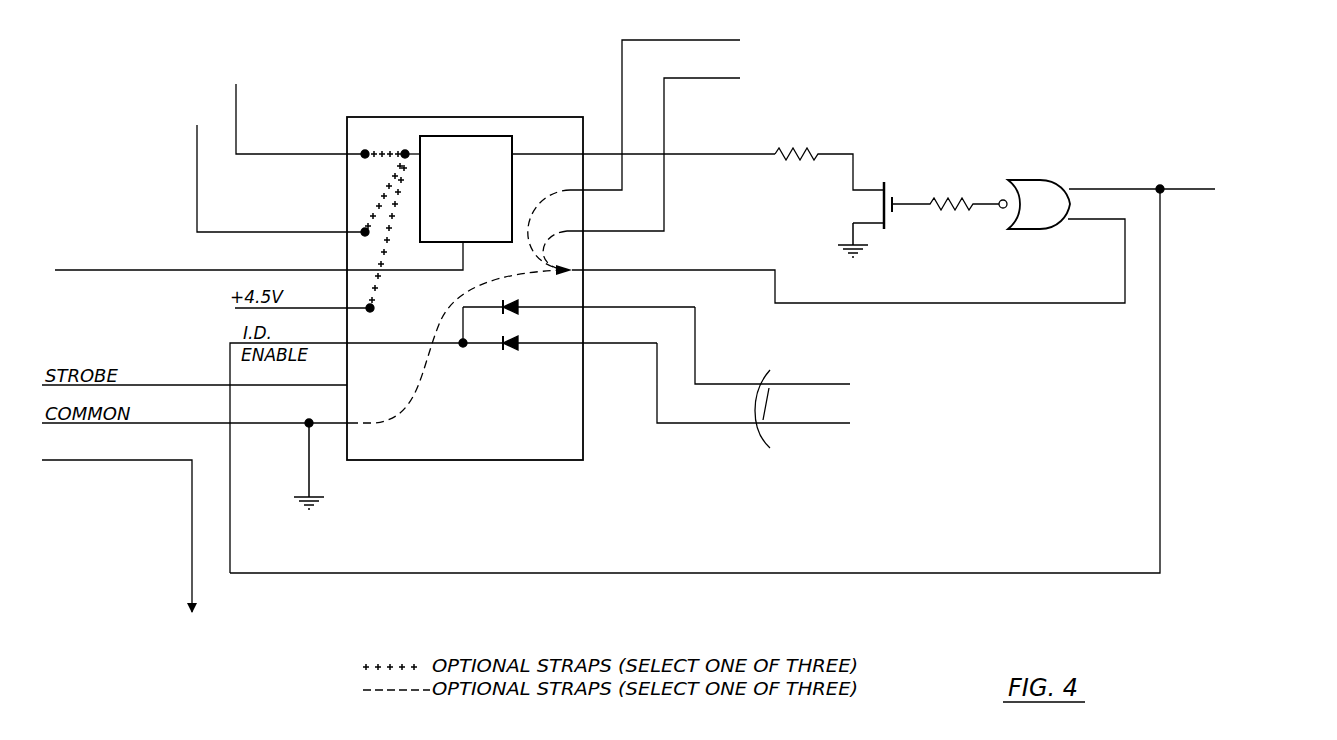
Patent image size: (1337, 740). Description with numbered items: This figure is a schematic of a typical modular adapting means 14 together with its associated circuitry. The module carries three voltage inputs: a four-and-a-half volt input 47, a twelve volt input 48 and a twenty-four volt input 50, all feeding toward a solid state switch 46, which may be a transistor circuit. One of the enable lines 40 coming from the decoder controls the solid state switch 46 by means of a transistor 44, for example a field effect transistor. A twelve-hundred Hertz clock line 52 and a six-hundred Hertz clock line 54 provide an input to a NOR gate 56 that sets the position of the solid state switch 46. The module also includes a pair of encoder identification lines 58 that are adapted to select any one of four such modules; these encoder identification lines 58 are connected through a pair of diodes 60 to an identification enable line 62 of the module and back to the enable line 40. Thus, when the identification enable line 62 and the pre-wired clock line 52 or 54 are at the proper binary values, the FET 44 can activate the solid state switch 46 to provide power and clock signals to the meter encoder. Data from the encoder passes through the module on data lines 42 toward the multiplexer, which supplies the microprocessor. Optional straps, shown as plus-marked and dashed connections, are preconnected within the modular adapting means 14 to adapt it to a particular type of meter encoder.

The modular adapting means 14 is at (518, 462).
The enable line 40 is at (1200, 185).
The data lines 42 is at (192, 573).
The transistor 44 is at (888, 183).
The solid state switch 46 is at (477, 136).
The 4.5 volt input 47 is at (315, 270).
The 12 volt input 48 is at (304, 153).
The 24 volt input 50 is at (197, 167).
The 1200 Hertz clock line 52 is at (700, 38).
The 600 Hertz clock line 54 is at (694, 80).
The NOR gate 56 is at (1045, 180).
The encoder identification lines 58 is at (770, 448).
The diodes 60 is at (522, 340).
The identification enable line 62 is at (694, 575).